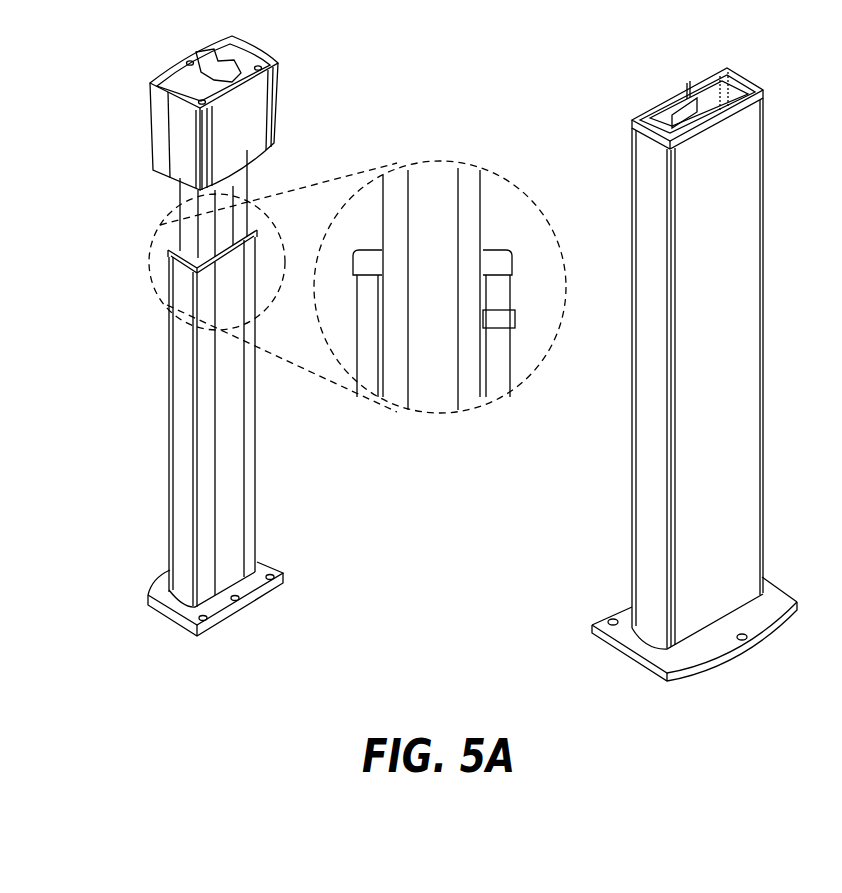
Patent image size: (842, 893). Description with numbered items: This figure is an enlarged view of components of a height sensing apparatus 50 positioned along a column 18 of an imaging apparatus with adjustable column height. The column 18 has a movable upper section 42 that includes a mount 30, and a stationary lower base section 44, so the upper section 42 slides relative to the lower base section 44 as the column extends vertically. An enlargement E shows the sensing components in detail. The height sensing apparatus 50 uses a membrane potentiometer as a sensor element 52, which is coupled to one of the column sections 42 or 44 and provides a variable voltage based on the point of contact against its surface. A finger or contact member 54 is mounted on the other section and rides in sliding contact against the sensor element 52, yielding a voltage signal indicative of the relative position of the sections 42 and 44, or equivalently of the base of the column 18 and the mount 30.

The mount 30 is at (168, 72).
The movable upper section 42 is at (186, 216).
The column 18 is at (238, 481).
The stationary lower base section 44 is at (181, 489).
The enlargement E is at (147, 268).
The height sensing apparatus 50 is at (397, 138).
The sensor element 52 is at (470, 175).
The contact member 54 is at (513, 318).